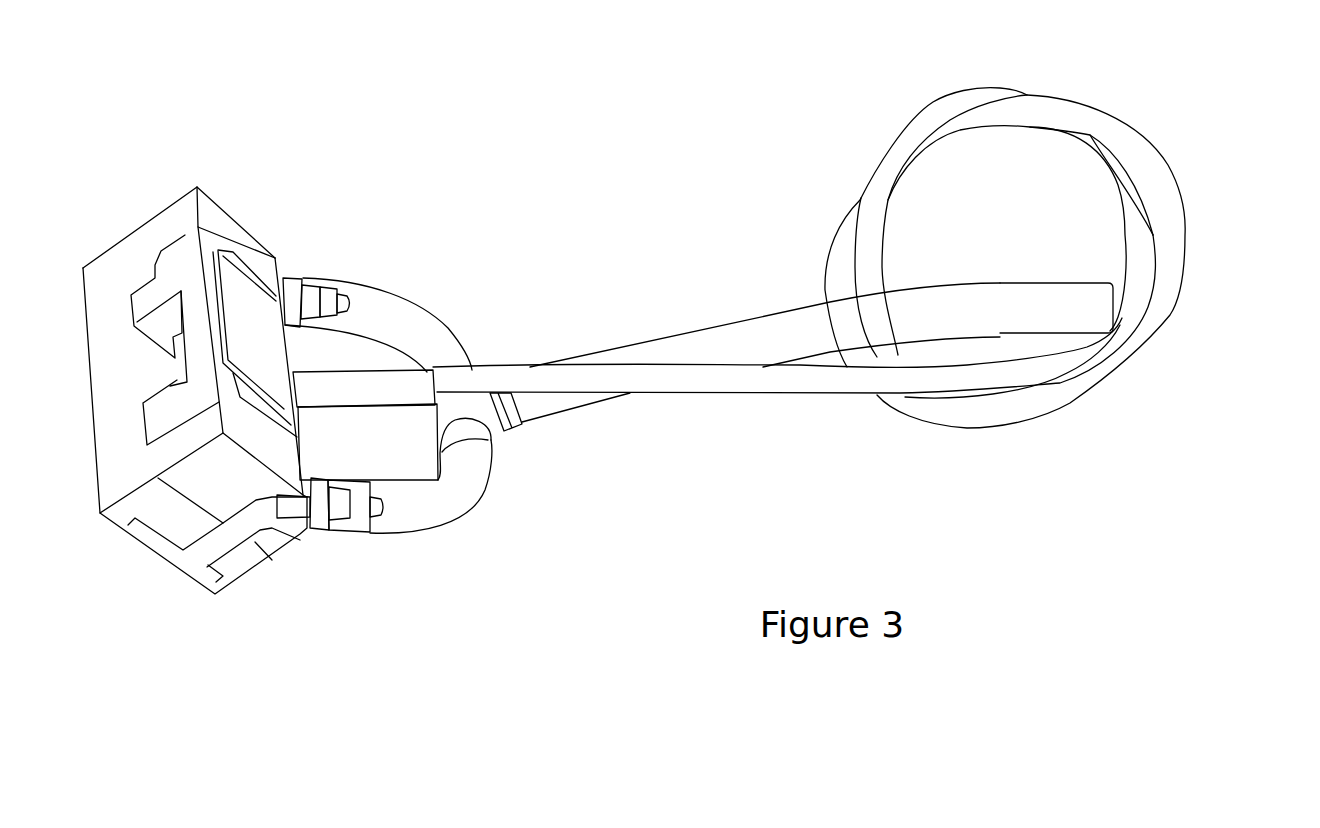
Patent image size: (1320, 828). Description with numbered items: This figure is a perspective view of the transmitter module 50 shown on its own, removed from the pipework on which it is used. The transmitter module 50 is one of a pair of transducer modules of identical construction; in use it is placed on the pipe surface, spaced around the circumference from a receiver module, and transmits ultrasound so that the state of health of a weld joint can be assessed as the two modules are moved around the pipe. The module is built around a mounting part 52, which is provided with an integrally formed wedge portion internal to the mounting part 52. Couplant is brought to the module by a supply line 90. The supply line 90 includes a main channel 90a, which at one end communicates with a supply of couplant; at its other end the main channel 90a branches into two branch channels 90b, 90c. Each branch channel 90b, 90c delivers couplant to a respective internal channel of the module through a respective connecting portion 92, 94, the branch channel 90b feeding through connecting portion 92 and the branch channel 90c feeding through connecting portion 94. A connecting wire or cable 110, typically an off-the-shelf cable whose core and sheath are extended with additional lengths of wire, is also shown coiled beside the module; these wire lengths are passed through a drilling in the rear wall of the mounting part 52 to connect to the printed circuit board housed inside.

The transmitter module 50 is at (320, 232).
The mounting part 52 is at (150, 221).
The supply line 90 is at (758, 306).
The main channel 90a is at (1047, 305).
The branch channel 90b is at (450, 503).
The branch channel 90c is at (430, 335).
The connecting portion 92 is at (317, 517).
The connecting portion 94 is at (283, 277).
The connecting wire or cable 110 is at (1181, 161).